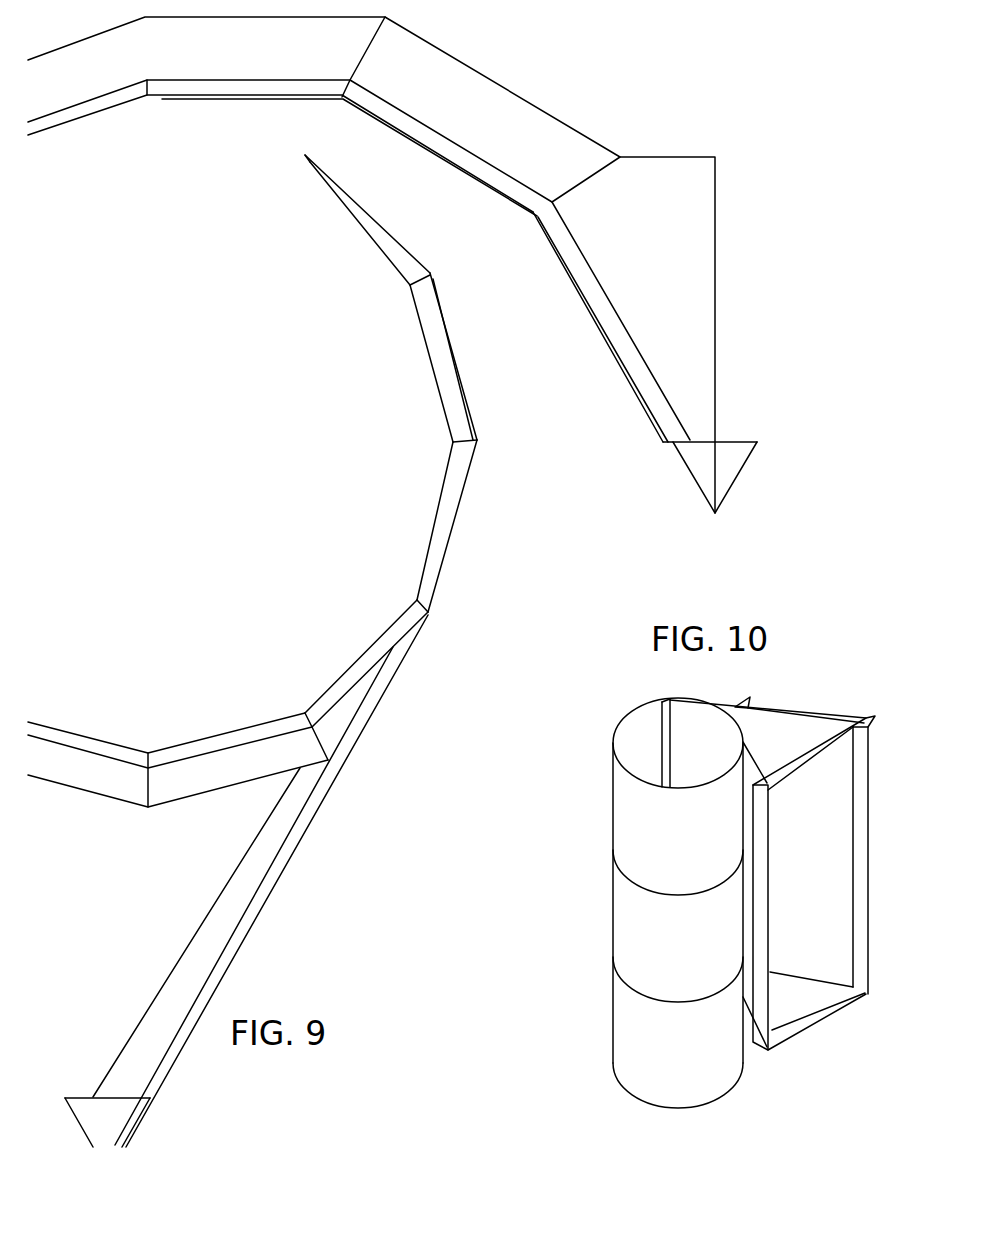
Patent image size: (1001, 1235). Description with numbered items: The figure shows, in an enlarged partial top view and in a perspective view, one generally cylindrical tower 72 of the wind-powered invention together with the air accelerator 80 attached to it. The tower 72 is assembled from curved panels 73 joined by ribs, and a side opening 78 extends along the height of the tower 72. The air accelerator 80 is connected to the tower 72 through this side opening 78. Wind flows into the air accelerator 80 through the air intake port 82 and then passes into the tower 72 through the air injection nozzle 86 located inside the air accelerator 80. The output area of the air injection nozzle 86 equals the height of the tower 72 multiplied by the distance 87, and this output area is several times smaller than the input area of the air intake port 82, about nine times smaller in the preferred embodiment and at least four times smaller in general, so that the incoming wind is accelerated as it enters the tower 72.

In FIG. 9, the tower 72 is at (446, 492).
In FIG. 10, the tower 72 is at (520, 750).
In FIG. 10, the curved panel 73 is at (614, 832).
In FIG. 9, the side opening 78 is at (352, 104).
In FIG. 9, the air accelerator 80 is at (580, 533).
In FIG. 10, the air accelerator 80 is at (823, 693).
In FIG. 10, the air intake port 82 is at (853, 838).
In FIG. 9, the air injection nozzle 86 is at (431, 206).
In FIG. 10, the air injection nozzle 86 is at (657, 712).
In FIG. 9, the distance 87 is at (265, 159).